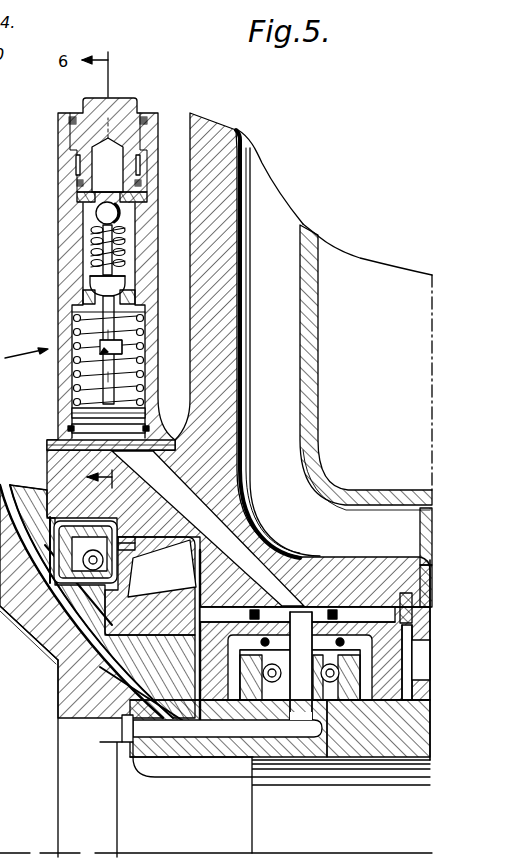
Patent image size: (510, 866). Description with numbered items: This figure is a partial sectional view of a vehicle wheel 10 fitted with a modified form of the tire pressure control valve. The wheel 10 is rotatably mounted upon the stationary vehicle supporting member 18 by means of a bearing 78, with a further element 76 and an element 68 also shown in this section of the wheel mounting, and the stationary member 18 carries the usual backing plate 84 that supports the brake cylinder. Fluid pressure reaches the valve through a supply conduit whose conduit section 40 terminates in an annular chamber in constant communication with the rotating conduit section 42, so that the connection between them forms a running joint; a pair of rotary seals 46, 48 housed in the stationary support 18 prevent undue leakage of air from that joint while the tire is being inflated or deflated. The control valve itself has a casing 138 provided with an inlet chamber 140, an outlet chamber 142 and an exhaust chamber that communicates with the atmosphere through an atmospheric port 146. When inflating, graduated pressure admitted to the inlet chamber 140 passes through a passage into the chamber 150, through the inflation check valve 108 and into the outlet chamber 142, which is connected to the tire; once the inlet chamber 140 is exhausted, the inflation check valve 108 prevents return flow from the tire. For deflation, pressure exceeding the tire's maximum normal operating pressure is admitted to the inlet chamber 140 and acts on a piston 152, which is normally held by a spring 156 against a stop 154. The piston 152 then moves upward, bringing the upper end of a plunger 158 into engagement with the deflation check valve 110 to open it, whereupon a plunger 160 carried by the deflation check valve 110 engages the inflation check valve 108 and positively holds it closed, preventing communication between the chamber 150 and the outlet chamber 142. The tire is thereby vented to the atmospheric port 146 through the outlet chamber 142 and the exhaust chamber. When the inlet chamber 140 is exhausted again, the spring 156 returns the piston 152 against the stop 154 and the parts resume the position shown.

The vehicle wheel 10 is at (206, 262).
The vehicle supporting member 18 is at (393, 745).
The conduit section 40 is at (62, 624).
The conduit section 42 is at (233, 551).
The rotary seal 46 is at (221, 706).
The rotary seal 48 is at (388, 708).
The ball bearing 68 is at (308, 655).
The seal 76 is at (94, 552).
The bearing 78 is at (180, 580).
The backing plate 84 is at (314, 416).
The inflation check valve 108 is at (120, 202).
The deflation check valve 110 is at (100, 289).
The casing 138 is at (62, 307).
The inlet chamber 140 is at (62, 447).
The outlet chamber 142 is at (128, 218).
The atmospheric port 146 is at (98, 356).
The chamber 150 is at (116, 168).
The piston 152 is at (78, 409).
The stop 154 is at (75, 430).
The spring 156 is at (82, 333).
The plunger 158 is at (112, 309).
The plunger 160 is at (112, 262).